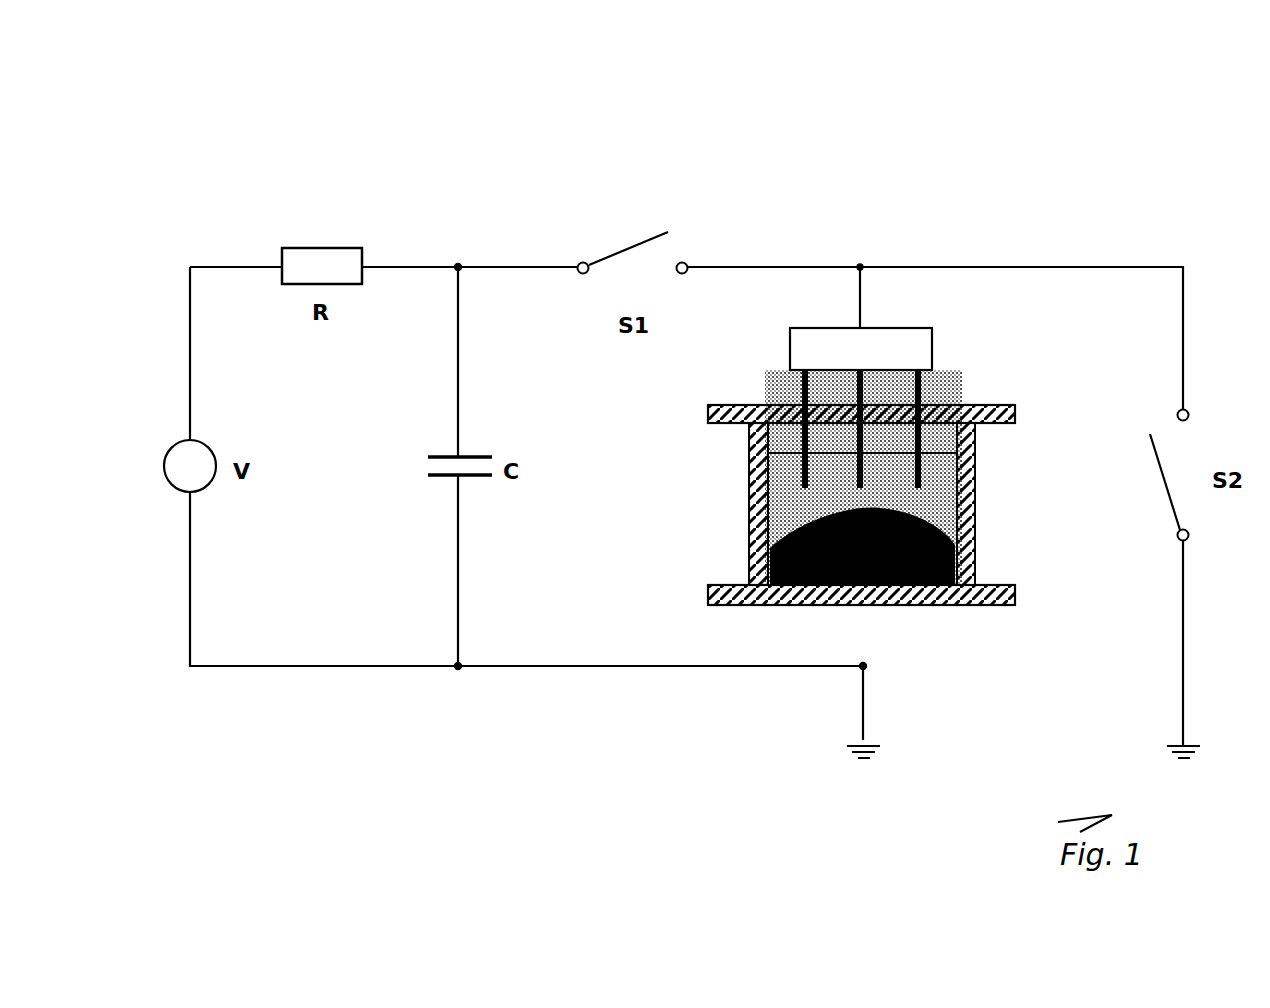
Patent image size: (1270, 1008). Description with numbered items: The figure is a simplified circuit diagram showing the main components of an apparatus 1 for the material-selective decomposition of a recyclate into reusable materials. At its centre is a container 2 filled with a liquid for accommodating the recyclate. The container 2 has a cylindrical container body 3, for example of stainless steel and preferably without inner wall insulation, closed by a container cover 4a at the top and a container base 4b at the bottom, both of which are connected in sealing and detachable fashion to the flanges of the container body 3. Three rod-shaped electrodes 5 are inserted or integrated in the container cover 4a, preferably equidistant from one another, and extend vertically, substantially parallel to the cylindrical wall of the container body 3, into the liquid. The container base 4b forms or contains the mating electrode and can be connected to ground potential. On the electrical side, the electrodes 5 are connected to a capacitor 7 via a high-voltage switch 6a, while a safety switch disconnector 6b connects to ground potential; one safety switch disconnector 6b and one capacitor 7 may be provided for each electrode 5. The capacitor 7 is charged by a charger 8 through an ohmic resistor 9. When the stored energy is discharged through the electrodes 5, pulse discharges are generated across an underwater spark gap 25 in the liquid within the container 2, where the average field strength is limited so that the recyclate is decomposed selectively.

The apparatus 1 is at (927, 125).
The container 2 is at (978, 505).
The container body 3 is at (749, 508).
The container cover 4a is at (978, 402).
The container base 4b is at (940, 606).
The electrodes 5 is at (797, 396).
The high-voltage switch 6a is at (636, 246).
The safety switch disconnector 6b is at (1161, 484).
The capacitor 7 is at (470, 455).
The charger 8 is at (203, 443).
The ohmic resistor 9 is at (335, 246).
The underwater spark gap 25 is at (808, 523).